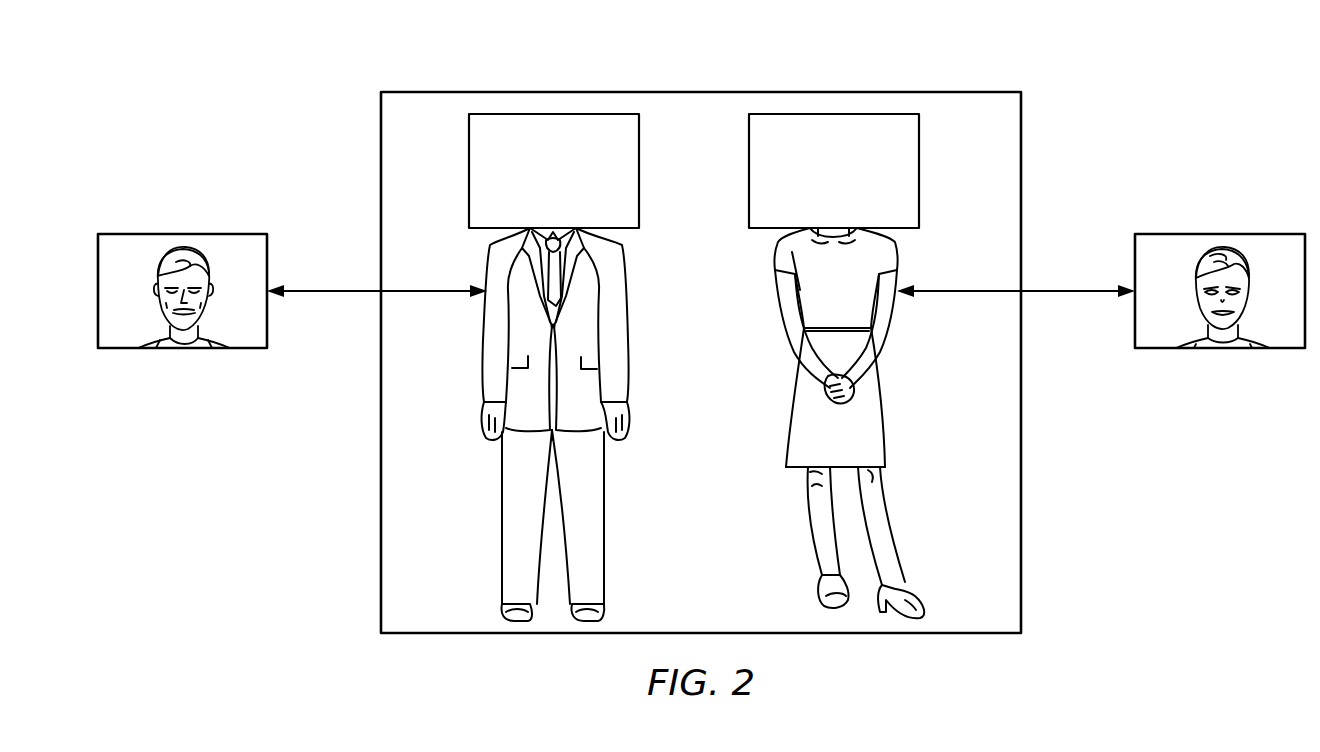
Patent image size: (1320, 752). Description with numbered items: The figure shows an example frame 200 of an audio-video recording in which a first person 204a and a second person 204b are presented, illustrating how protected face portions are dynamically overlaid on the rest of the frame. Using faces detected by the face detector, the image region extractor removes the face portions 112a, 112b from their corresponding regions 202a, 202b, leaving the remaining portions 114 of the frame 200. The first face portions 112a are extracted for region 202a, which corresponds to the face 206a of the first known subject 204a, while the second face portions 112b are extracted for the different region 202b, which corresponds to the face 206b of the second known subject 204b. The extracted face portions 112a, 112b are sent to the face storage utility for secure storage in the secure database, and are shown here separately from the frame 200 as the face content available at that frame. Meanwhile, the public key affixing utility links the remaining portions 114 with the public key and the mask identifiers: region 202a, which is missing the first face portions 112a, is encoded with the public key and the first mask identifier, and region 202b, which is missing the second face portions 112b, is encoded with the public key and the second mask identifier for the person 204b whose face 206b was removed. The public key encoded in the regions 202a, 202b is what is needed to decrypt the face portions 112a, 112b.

The frame 200 is at (704, 72).
The remaining portions 114 is at (1021, 125).
The region 202a is at (640, 140).
The region 202b is at (749, 185).
The first person 204a is at (627, 388).
The second person 204b is at (887, 388).
The first face portions 112a is at (221, 292).
The second face portions 112b is at (1187, 292).
The face 206a is at (203, 314).
The face 206b is at (1201, 307).